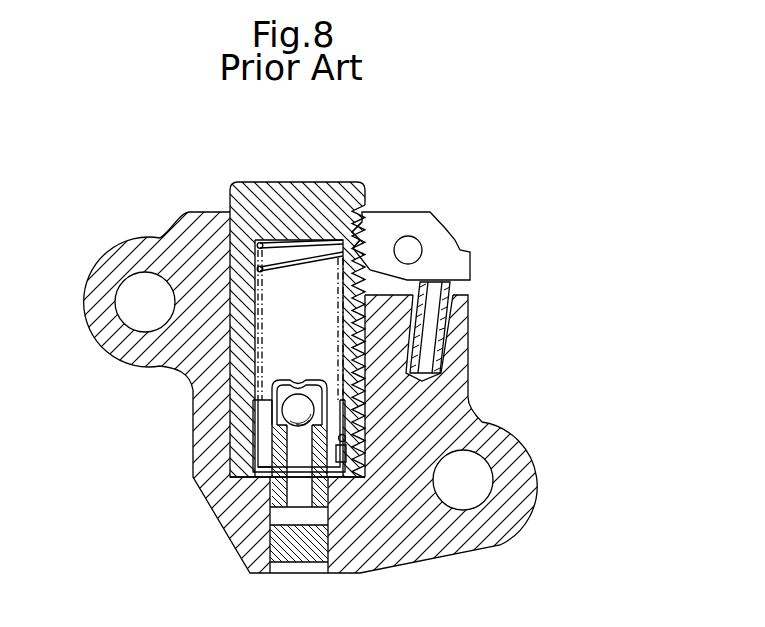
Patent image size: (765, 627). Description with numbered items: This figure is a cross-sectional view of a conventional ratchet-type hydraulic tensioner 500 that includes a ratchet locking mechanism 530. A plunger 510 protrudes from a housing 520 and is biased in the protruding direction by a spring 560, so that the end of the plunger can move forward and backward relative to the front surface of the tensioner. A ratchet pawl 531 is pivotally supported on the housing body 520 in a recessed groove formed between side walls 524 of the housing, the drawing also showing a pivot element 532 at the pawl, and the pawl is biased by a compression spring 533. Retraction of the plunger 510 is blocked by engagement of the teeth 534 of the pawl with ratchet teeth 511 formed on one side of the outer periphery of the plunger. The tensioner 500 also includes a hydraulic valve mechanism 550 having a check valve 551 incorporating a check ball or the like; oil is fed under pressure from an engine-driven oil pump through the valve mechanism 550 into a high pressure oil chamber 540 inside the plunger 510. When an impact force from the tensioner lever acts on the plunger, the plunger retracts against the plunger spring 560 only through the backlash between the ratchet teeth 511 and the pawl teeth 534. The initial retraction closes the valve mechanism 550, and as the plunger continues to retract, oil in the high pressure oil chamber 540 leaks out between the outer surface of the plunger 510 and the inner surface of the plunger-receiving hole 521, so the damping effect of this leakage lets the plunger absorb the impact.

The ratchet-type hydraulic tensioner 500 is at (168, 197).
The plunger 510 is at (282, 190).
The ratchet teeth 511 is at (343, 210).
The housing 520 is at (466, 434).
The plunger-receiving hole 521 is at (368, 393).
The side walls 524 is at (345, 288).
The ratchet locking mechanism 530 is at (560, 127).
The ratchet pawl 531 is at (403, 217).
The pawl pivot pin 532 is at (420, 255).
The compression spring 533 is at (462, 302).
The pawl teeth 534 is at (377, 213).
The high pressure oil chamber 540 is at (273, 363).
The hydraulic valve mechanism 550 is at (298, 378).
The check valve 551 is at (270, 400).
The spring 560 is at (343, 438).